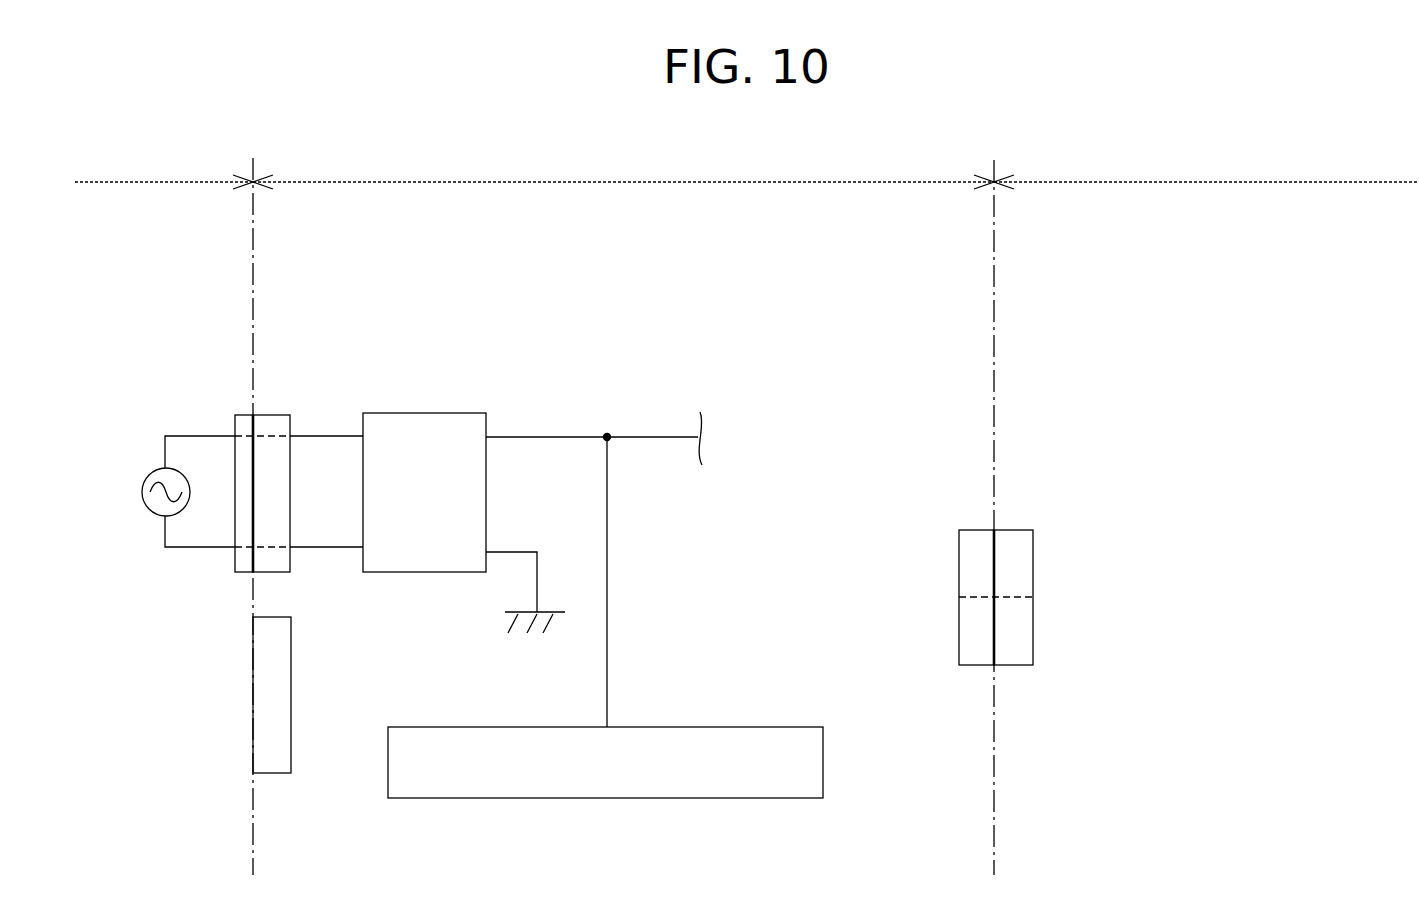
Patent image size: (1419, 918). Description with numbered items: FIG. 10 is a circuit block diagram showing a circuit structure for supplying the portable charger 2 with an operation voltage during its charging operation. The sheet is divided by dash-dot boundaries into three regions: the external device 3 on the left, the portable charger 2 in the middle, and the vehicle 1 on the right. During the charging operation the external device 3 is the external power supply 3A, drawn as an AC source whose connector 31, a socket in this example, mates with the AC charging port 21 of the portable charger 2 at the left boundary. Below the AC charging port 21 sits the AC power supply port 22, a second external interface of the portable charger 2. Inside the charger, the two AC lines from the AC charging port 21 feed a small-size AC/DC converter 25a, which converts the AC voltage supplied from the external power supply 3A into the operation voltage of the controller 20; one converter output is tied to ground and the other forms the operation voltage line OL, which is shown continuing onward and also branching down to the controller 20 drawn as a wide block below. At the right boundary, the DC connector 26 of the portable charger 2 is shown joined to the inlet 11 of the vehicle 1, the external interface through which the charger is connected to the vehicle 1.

The vehicle 1 is at (1206, 163).
The portable charger 2 is at (623, 164).
The external device 3 is at (164, 164).
The external power supply 3A is at (151, 472).
The connector 31 is at (243, 413).
The AC charging port 21 is at (272, 413).
The AC power supply port 22 is at (275, 775).
The small-size AC/DC converter 25a is at (458, 412).
The operation voltage line OL is at (657, 432).
The controller 20 is at (780, 725).
The DC connector 26 is at (980, 528).
The inlet 11 is at (1013, 528).